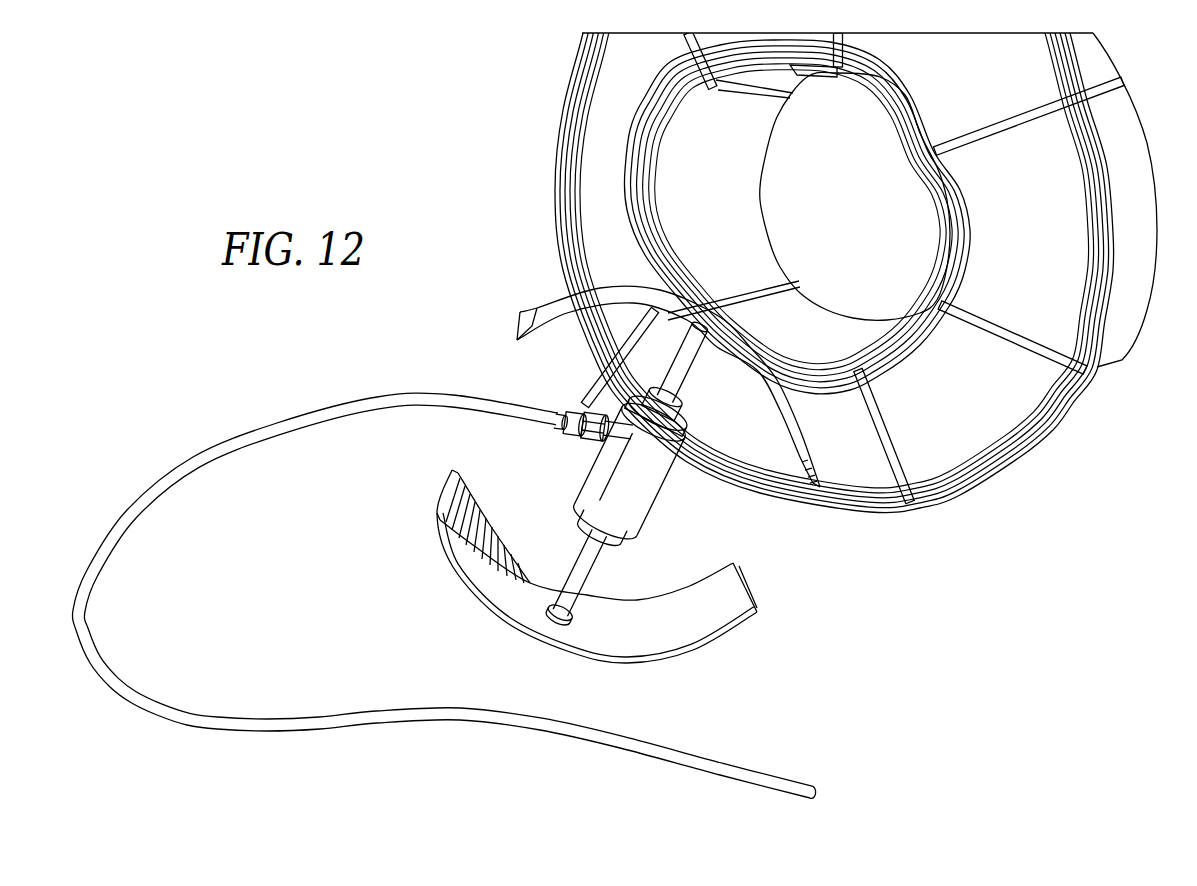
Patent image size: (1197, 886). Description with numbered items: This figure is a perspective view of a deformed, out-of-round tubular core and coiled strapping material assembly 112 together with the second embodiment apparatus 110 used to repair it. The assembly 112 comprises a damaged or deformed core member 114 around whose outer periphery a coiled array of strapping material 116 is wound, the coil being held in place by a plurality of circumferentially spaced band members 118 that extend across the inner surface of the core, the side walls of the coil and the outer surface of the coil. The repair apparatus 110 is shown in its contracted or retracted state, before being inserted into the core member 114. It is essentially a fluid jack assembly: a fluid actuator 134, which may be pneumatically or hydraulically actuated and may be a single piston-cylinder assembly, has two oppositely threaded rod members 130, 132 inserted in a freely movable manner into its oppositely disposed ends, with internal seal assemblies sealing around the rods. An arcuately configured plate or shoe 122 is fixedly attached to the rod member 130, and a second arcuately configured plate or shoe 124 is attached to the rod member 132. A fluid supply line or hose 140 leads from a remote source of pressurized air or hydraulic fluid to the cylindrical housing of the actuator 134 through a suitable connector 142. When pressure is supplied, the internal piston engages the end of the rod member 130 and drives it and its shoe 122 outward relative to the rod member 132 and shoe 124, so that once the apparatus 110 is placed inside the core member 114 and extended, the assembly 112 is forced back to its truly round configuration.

The second embodiment apparatus 110 is at (757, 557).
The tubular core and coiled strapping material assembly 112 is at (1028, 455).
The core member 114 is at (840, 333).
The coiled strapping material 116 is at (570, 162).
The band members 118 is at (713, 90).
The arcuately configured plate or shoe 122 is at (537, 312).
The arcuately configured plate or shoe 124 is at (503, 590).
The threaded rod member 130 is at (677, 400).
The threaded rod member 132 is at (587, 573).
The fluid actuator 134 is at (647, 490).
The fluid supply line or hose 140 is at (267, 725).
The connector 142 is at (593, 435).